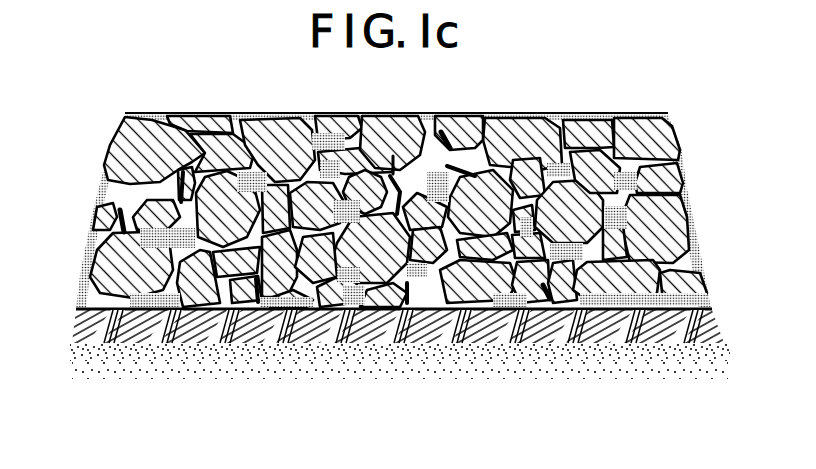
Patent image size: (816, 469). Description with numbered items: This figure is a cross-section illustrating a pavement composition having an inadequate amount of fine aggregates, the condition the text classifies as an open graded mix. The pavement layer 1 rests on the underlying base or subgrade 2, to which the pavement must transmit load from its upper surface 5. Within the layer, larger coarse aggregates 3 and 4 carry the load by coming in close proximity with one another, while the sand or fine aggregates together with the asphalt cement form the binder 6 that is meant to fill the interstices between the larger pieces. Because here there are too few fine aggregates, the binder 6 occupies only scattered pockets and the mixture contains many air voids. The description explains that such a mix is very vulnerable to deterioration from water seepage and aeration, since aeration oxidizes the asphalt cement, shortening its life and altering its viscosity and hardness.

The surface layer 1 is at (105, 181).
The base / substrate 2 is at (148, 323).
The surface aggregate particles 3 is at (500, 113).
The aggregate particles 4 is at (365, 132).
The upper surface of the layer 5 is at (215, 100).
The binder 6 is at (393, 160).